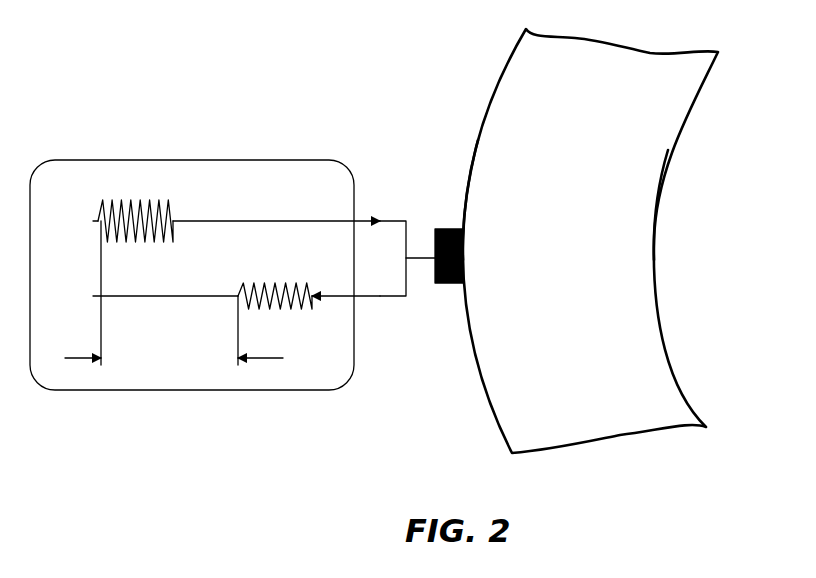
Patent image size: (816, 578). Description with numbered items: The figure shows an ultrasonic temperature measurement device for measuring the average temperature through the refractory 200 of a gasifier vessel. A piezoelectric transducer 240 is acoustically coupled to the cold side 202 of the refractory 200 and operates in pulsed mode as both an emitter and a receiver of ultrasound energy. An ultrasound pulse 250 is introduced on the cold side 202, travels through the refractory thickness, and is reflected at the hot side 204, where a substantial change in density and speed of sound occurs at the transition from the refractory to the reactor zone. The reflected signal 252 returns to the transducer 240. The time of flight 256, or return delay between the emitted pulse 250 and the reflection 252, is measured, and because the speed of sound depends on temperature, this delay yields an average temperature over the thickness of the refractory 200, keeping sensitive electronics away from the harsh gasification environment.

The refractory 200 is at (590, 241).
The cold side 202 is at (460, 202).
The hot side 204 is at (657, 213).
The piezoelectric transducer 240 is at (437, 285).
The ultrasound pulse 250 is at (135, 200).
The reflected pulse 252 is at (271, 285).
The time of flight 256 is at (167, 360).